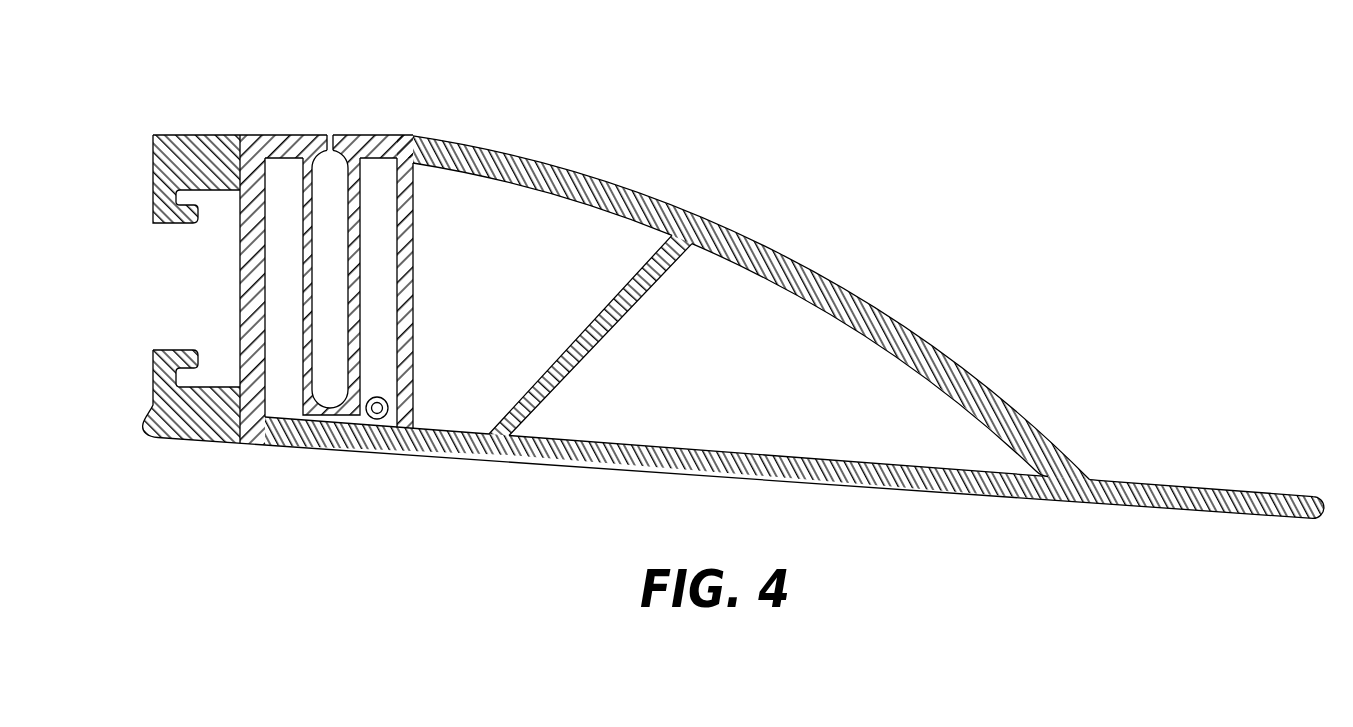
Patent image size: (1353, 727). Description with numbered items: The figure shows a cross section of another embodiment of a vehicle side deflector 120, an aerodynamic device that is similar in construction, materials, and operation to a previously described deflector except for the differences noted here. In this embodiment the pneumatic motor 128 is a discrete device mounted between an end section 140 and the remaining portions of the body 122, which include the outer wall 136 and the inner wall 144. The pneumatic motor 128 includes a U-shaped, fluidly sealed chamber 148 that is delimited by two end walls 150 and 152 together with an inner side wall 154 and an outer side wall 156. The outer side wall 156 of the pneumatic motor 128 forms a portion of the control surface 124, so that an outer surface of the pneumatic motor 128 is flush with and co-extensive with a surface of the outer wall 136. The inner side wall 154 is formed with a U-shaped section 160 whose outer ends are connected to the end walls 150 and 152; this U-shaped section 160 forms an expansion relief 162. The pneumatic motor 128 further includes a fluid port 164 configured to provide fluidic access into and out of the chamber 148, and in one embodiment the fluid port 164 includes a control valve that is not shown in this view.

The vehicle side deflector 120 is at (965, 290).
The body 122 is at (661, 187).
The control surface 124 is at (1010, 496).
The pneumatic motor 128 is at (383, 126).
The outer wall 136 is at (815, 480).
The end section 140 is at (161, 162).
The inner wall 144 is at (808, 270).
The chamber 148 is at (280, 290).
The end wall 150 is at (240, 252).
The end wall 152 is at (414, 288).
The inner side wall 154 is at (300, 128).
The outer side wall 156 is at (323, 448).
The U-shaped section 160 is at (301, 188).
The expansion relief 162 is at (330, 127).
The fluid port 164 is at (378, 420).